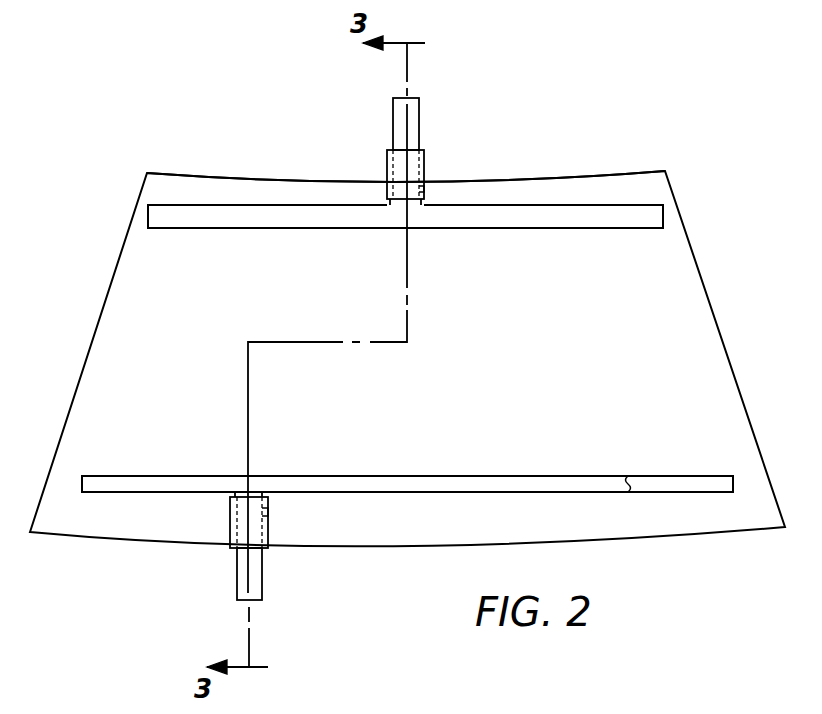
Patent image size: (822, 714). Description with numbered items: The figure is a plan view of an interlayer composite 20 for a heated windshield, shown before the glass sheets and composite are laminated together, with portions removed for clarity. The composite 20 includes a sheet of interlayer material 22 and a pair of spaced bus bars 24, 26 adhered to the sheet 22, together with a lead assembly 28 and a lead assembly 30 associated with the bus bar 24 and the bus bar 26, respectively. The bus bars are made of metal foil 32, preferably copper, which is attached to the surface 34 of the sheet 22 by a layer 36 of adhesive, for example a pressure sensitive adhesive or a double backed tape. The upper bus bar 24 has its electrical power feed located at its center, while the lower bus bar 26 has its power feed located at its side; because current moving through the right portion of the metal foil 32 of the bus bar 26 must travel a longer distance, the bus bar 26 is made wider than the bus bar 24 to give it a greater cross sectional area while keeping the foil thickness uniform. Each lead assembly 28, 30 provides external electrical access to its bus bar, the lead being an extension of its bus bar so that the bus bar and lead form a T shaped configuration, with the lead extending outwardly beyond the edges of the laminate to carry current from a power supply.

The interlayer composite 20 is at (720, 186).
The sheet of interlayer material 22 is at (585, 176).
The bus bar 24 is at (590, 229).
The bus bar 26 is at (603, 475).
The lead assembly 28 is at (381, 355).
The lead assembly 30 is at (242, 560).
The metal foil 32 is at (483, 222).
The surface of the sheet 34 is at (490, 382).
The layer of adhesive 36 is at (673, 481).